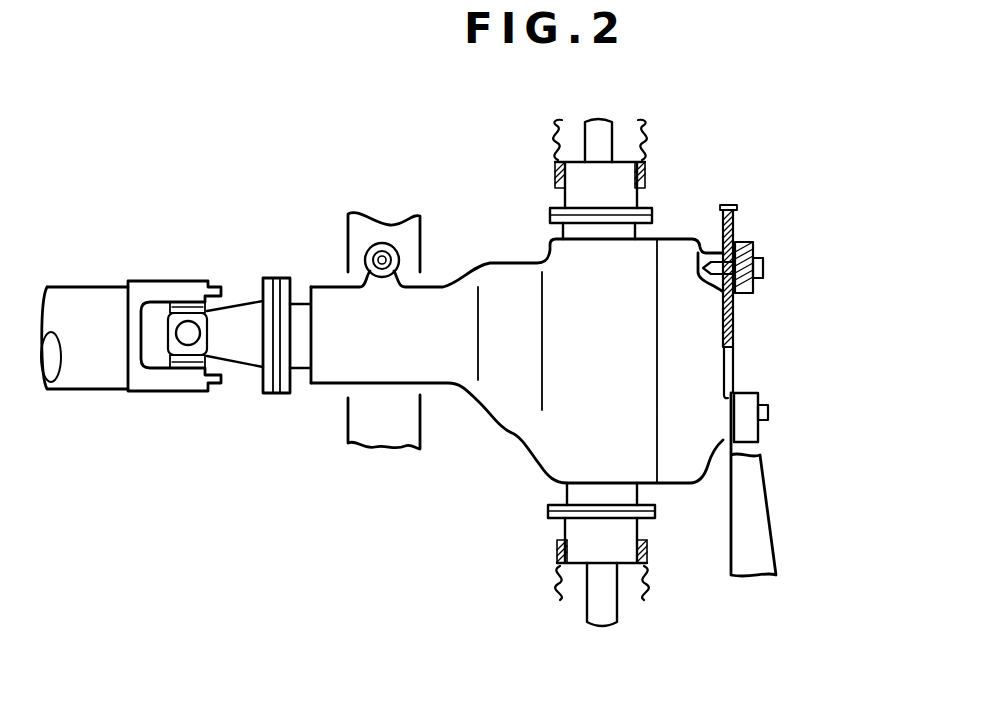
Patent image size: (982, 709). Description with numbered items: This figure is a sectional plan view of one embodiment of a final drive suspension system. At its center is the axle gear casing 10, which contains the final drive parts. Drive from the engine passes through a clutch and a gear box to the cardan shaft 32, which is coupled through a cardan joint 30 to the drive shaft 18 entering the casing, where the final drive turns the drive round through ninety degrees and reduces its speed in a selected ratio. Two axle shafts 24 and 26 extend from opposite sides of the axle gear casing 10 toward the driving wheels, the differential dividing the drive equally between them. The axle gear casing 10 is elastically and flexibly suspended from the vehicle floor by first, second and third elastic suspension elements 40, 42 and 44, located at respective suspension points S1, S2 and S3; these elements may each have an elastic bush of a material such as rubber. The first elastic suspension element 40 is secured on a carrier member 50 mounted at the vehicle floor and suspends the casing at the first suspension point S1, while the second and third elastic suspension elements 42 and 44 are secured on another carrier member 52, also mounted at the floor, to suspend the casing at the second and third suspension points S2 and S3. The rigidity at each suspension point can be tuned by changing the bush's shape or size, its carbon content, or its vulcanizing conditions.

The axle gear casing 10 is at (526, 443).
The drive shaft 18 is at (299, 318).
The axle shaft 24 is at (603, 132).
The axle shaft 26 is at (603, 605).
The cardan joint 30 is at (188, 270).
The cardan shaft 32 is at (77, 300).
The first elastic suspension element 40 is at (380, 256).
The second elastic suspension element 42 is at (742, 242).
The third elastic suspension element 44 is at (746, 420).
The carrier member 50 is at (392, 432).
The carrier member 52 is at (752, 555).
The first suspension point S1 is at (398, 241).
The second suspension point S2 is at (768, 252).
The third suspension point S3 is at (772, 400).